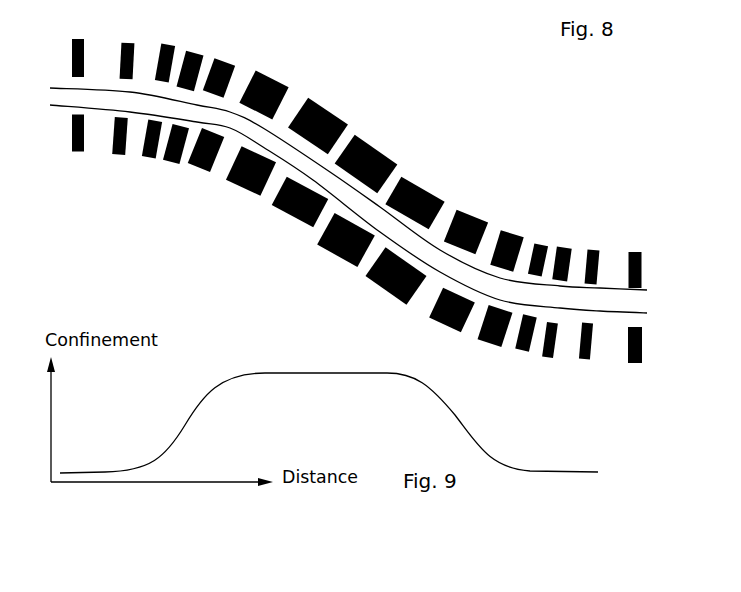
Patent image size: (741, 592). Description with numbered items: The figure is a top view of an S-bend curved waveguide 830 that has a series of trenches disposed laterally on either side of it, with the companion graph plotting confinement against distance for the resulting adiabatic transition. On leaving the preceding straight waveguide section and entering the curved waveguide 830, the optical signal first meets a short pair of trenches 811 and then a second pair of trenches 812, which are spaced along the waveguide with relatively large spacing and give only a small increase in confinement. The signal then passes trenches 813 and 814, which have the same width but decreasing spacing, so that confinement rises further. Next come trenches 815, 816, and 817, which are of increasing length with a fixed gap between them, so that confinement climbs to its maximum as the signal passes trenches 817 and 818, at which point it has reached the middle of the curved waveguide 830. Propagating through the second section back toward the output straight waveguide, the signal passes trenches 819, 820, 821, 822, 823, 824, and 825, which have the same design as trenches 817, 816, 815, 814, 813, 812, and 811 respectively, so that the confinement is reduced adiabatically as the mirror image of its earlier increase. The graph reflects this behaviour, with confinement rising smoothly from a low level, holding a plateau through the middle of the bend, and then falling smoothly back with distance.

The short pair of trenches 811 is at (68, 97).
The second pair of trenches 812 is at (114, 97).
The trench 813 is at (156, 97).
The trench 814 is at (180, 124).
The trench 815 is at (224, 124).
The trench 816 is at (230, 213).
The trench 817 is at (311, 163).
The trench 818 is at (365, 201).
The trench 819 is at (406, 242).
The trench 820 is at (517, 230).
The trench 821 is at (506, 284).
The trench 822 is at (533, 310).
The trench 823 is at (568, 310).
The trench 824 is at (606, 310).
The trench 825 is at (650, 310).
The curved waveguide 830 is at (50, 97).